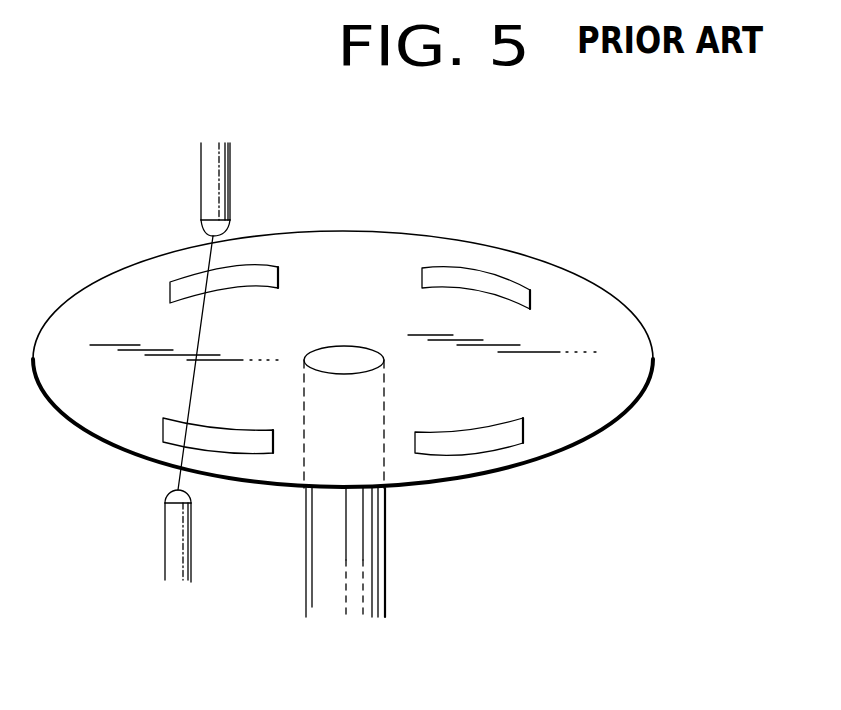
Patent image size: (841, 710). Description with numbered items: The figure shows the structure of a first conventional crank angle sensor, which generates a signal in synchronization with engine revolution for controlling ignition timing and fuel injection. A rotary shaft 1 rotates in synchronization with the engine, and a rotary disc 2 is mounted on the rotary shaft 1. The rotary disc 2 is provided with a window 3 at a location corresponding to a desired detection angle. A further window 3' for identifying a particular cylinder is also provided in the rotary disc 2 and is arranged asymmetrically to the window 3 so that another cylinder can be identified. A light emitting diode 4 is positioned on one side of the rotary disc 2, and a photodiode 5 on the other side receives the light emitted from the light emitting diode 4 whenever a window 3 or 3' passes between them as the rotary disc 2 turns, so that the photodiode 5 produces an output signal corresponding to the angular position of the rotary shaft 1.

The rotary shaft 1 is at (386, 547).
The rotary disc 2 is at (653, 358).
The window 3 is at (469, 474).
The window 3' is at (262, 281).
The light emitting diode 4 is at (230, 177).
The photodiode 5 is at (191, 545).